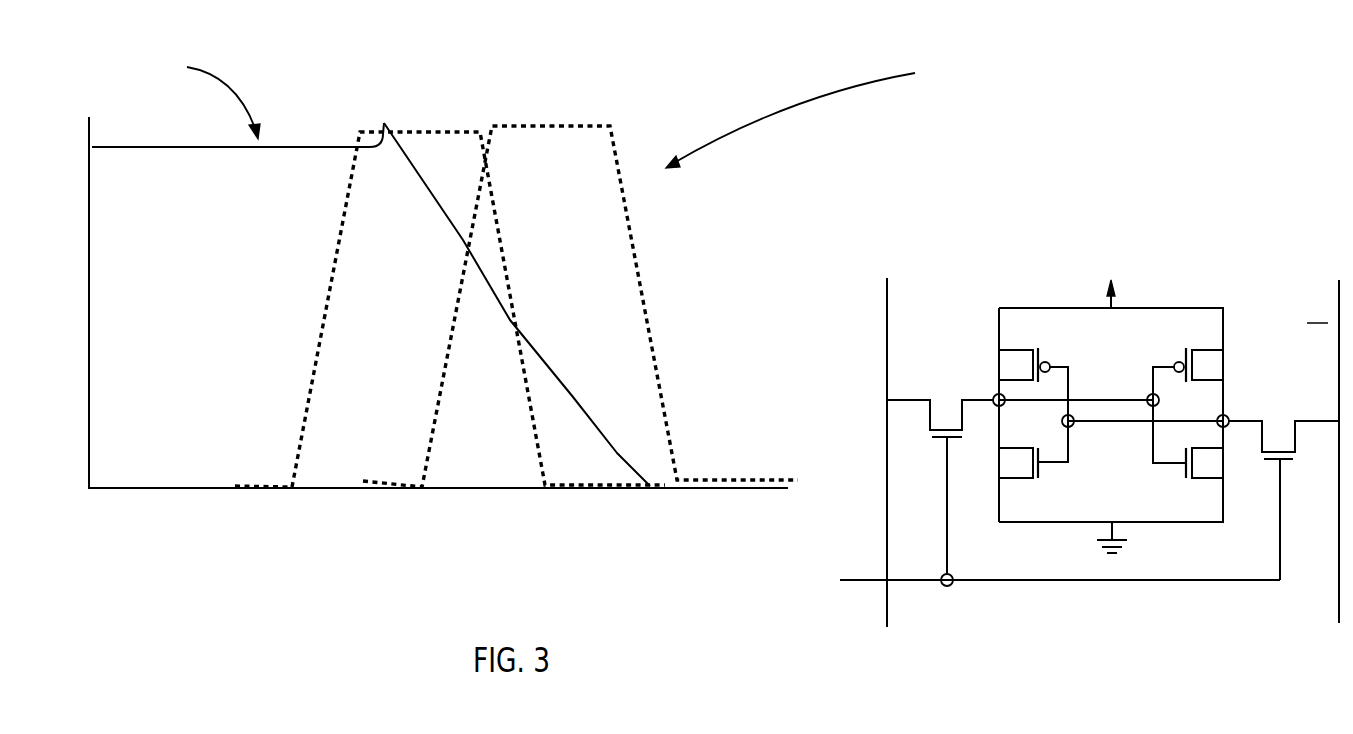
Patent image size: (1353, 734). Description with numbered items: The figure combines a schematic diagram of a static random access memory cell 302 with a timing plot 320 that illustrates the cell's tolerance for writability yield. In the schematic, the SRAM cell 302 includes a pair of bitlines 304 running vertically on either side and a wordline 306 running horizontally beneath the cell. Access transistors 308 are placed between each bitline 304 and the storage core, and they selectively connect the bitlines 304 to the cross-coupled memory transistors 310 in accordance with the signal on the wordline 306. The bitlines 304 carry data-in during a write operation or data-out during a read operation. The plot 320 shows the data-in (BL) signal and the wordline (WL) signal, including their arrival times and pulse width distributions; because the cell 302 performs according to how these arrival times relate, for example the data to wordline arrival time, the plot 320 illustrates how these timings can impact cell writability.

The plot 320 is at (462, 73).
The SRAM cell 302 is at (1076, 214).
The bitlines 304 is at (887, 447).
The wordline 306 is at (872, 582).
The access transistors 308 is at (1317, 500).
The cross-coupled memory transistors 310 is at (1180, 362).